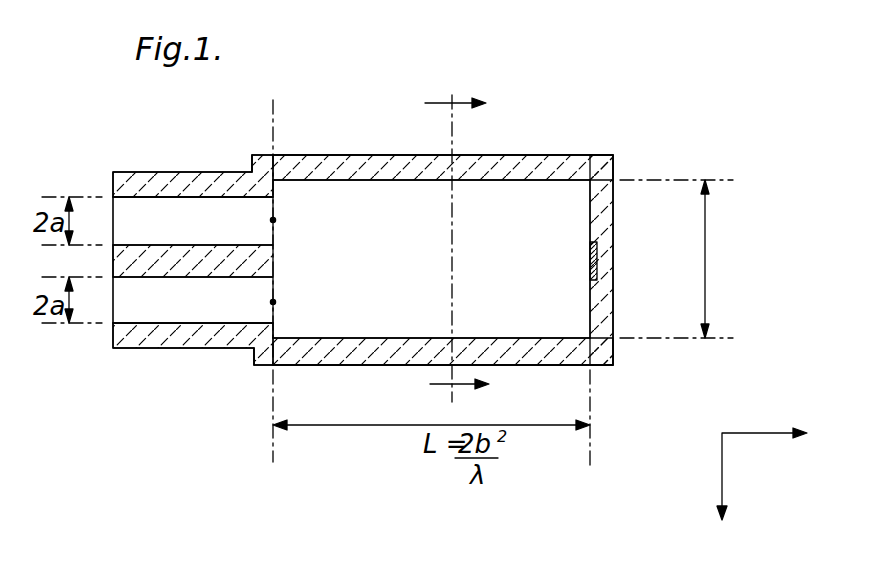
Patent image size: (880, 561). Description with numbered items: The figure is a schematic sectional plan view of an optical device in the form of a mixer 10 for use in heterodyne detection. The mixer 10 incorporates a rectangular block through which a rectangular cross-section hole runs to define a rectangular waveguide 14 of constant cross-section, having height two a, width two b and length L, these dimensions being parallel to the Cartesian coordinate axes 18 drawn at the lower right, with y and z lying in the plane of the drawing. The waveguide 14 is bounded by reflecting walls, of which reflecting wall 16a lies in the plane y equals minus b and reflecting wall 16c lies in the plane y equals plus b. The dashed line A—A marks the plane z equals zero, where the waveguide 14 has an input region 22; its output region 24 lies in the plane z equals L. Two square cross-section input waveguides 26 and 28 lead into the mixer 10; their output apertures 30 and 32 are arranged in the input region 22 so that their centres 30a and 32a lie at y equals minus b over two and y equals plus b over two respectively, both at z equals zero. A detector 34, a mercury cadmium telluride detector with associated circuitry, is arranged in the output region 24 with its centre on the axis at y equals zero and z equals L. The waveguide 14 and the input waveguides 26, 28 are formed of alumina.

The mixer 10 is at (313, 105).
The rectangular waveguide 14 is at (395, 185).
The reflecting wall 16a is at (503, 178).
The reflecting wall 16c is at (505, 340).
The Cartesian coordinate axes 18 is at (720, 465).
The input region 22 is at (256, 348).
The output region 24 is at (604, 194).
The input waveguide 26 is at (143, 203).
The input waveguide 28 is at (152, 313).
The output aperture 30 is at (275, 233).
The centre of output aperture 30a is at (275, 219).
The output aperture 32 is at (275, 290).
The centre of output aperture 32a is at (275, 303).
The detector 34 is at (600, 258).